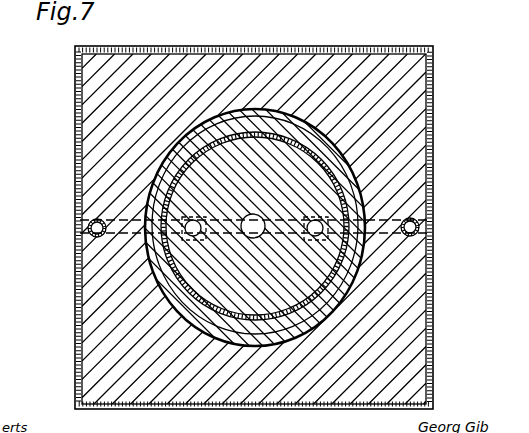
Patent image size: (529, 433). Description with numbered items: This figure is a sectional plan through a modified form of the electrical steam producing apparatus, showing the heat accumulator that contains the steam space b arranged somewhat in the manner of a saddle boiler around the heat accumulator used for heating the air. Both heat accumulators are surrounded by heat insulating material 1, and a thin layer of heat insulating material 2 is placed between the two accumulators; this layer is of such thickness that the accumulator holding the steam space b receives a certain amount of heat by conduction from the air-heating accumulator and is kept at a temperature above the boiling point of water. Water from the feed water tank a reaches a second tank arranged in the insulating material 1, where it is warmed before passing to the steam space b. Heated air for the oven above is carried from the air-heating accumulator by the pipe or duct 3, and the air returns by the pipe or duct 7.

The heat insulating material 1 is at (81, 141).
The thin layer of heat insulating material 2 is at (330, 153).
The pipe or duct 3 is at (87, 228).
The pipe or duct 7 is at (420, 226).
The feed water tank a is at (440, 190).
The steam space b is at (350, 198).